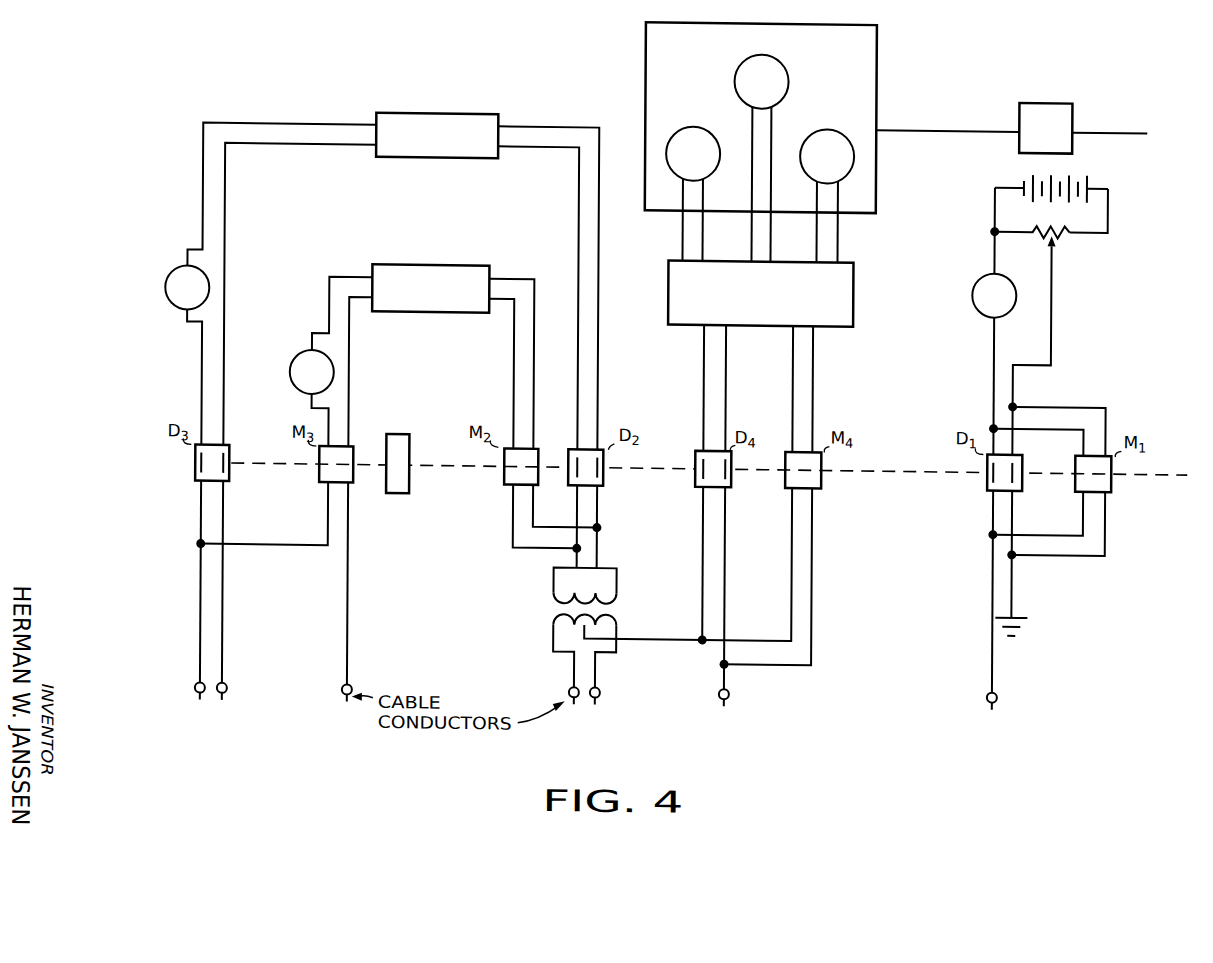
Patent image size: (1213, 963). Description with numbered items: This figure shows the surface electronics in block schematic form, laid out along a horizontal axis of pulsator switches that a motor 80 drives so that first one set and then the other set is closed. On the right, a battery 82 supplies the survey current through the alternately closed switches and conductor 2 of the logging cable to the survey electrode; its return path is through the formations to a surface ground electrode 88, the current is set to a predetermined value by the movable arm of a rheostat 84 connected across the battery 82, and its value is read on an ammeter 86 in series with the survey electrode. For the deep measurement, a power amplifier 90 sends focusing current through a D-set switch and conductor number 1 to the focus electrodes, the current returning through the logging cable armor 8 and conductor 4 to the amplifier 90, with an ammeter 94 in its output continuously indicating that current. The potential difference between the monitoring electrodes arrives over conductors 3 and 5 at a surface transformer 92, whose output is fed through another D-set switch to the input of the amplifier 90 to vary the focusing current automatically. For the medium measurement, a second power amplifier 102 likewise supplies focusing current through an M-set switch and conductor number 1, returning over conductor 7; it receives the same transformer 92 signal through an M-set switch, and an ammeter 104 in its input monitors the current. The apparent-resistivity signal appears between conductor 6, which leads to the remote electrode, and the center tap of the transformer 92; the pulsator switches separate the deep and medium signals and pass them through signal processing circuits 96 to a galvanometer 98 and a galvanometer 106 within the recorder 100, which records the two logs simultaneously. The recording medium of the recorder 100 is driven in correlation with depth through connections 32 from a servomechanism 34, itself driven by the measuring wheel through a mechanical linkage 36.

The conductor number 1 of logging cable 1 is at (200, 706).
The conductor 2 of logging cable 2 is at (992, 716).
The conductor 3 of logging cable 3 is at (574, 710).
The conductor 4 of logging cable 4 is at (222, 706).
The conductor 5 of logging cable 5 is at (595, 711).
The conductor 6 of logging cable 6 is at (724, 712).
The conductor 7 of logging cable 7 is at (347, 707).
The logging cable armor 8 is at (183, 459).
The connections 32 is at (939, 119).
The servomechanism 34 is at (1060, 90).
The mechanical linkage 36 is at (1100, 119).
The motor 80 is at (412, 477).
The battery 82 is at (1088, 171).
The rheostat 84 is at (1083, 219).
The ammeter 86 is at (983, 268).
The surface ground electrode 88 is at (1022, 603).
The power amplifier 90 is at (455, 108).
The transformer 92 is at (617, 599).
The ammeter 94 is at (175, 268).
The signal processing circuits 96 is at (855, 255).
The galvanometer 98 is at (688, 119).
The photo-recorder 100 is at (877, 38).
The power amplifier 102 is at (460, 260).
The ammeter 104 is at (304, 350).
The galvanometer 106 is at (832, 120).